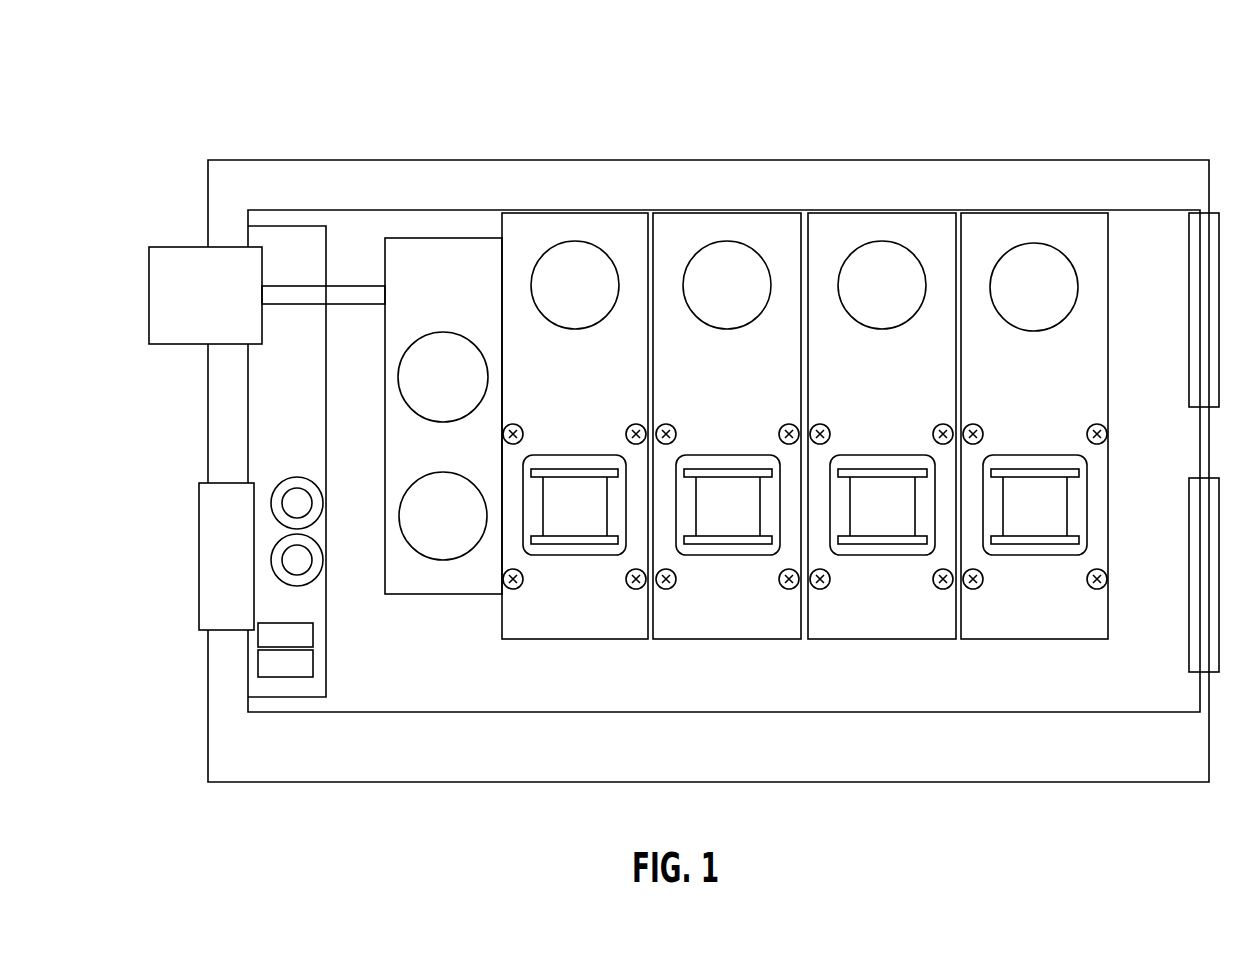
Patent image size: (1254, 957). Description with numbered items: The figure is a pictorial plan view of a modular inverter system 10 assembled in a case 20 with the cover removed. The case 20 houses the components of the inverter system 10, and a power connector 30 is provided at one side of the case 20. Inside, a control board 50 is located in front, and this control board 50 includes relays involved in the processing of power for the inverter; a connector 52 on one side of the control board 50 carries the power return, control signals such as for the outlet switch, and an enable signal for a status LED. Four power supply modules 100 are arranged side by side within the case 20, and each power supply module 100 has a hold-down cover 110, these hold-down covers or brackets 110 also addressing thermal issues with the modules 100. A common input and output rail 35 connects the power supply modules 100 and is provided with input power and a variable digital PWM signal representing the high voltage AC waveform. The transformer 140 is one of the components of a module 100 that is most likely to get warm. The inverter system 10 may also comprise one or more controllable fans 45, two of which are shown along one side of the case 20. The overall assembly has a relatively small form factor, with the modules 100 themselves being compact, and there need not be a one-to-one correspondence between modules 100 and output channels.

The inverter system 10 is at (161, 80).
The case 20 is at (393, 178).
The power connector 30 is at (167, 305).
The common output rail 35 is at (343, 297).
The controllable fan 45 is at (1197, 266).
The control board 50 is at (283, 381).
The connector 52 is at (225, 579).
The power supply module 100 is at (545, 243).
The hold-down cover 110 is at (525, 622).
The transformer 140 is at (591, 516).